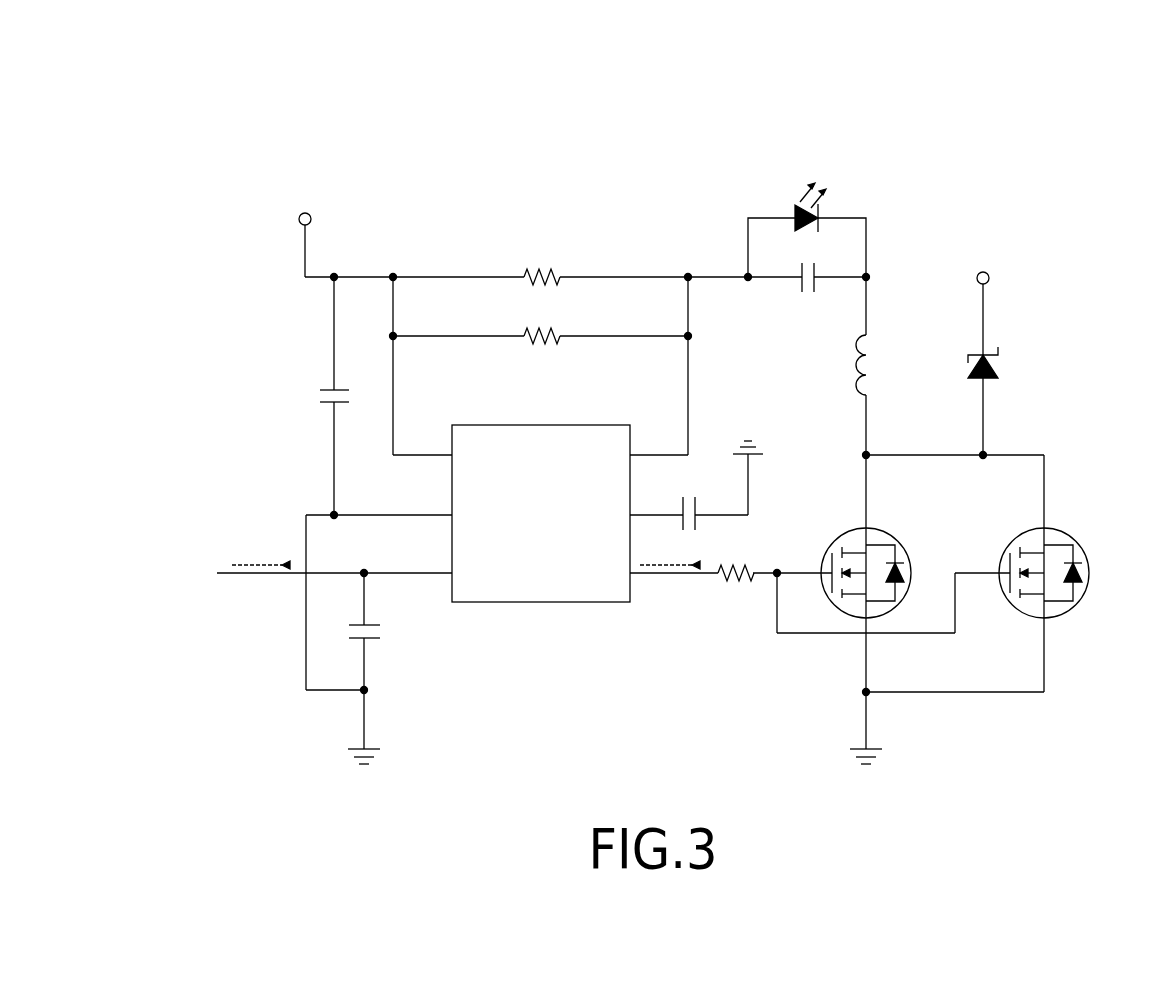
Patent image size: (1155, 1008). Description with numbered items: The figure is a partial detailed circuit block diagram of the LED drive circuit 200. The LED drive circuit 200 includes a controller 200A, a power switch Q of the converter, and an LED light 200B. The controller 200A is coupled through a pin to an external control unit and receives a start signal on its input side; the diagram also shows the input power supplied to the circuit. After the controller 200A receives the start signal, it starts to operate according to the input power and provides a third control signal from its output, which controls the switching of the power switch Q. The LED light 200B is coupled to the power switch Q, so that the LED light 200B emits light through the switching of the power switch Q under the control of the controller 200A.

The LED drive circuit 200 is at (632, 80).
The controller 200A is at (542, 432).
The LED light 200B is at (792, 210).
The power switch Q is at (843, 523).